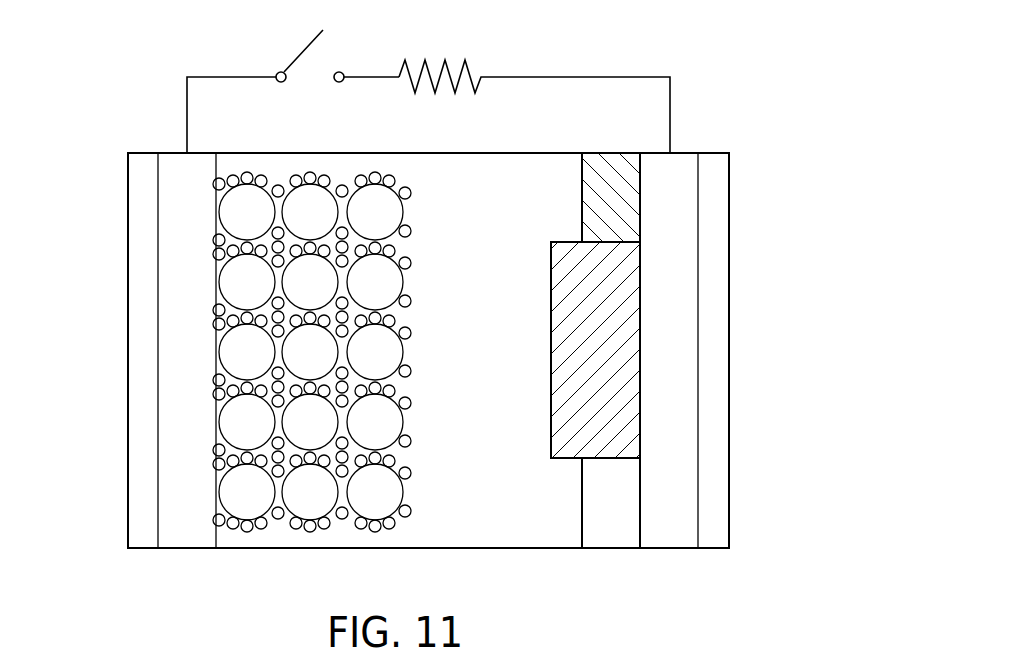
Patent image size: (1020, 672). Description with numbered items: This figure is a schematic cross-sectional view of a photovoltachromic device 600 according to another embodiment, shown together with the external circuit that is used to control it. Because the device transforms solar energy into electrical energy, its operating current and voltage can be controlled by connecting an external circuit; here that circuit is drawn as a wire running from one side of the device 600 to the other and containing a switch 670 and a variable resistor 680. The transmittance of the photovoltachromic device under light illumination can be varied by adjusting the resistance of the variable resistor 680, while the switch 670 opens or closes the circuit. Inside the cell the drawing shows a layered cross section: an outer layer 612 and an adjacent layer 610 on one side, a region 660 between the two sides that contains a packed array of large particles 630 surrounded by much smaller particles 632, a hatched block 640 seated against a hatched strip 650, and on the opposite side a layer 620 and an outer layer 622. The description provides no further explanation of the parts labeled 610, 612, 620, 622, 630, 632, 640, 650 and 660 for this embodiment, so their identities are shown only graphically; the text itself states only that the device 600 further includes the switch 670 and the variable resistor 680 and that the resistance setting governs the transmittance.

The photovoltachromic device 600 is at (65, 86).
The first electrode 610 is at (200, 535).
The first current collector 612 is at (145, 535).
The second electrode 620 is at (673, 535).
The second current collector 622 is at (712, 535).
The active material particles 630 is at (311, 177).
The conductive particles 632 is at (375, 177).
The hatched electrode block 640 is at (550, 346).
The hatched separator layer 650 is at (578, 192).
The electrolyte region 660 is at (475, 152).
The switch 670 is at (287, 65).
The variable resistor 680 is at (432, 70).